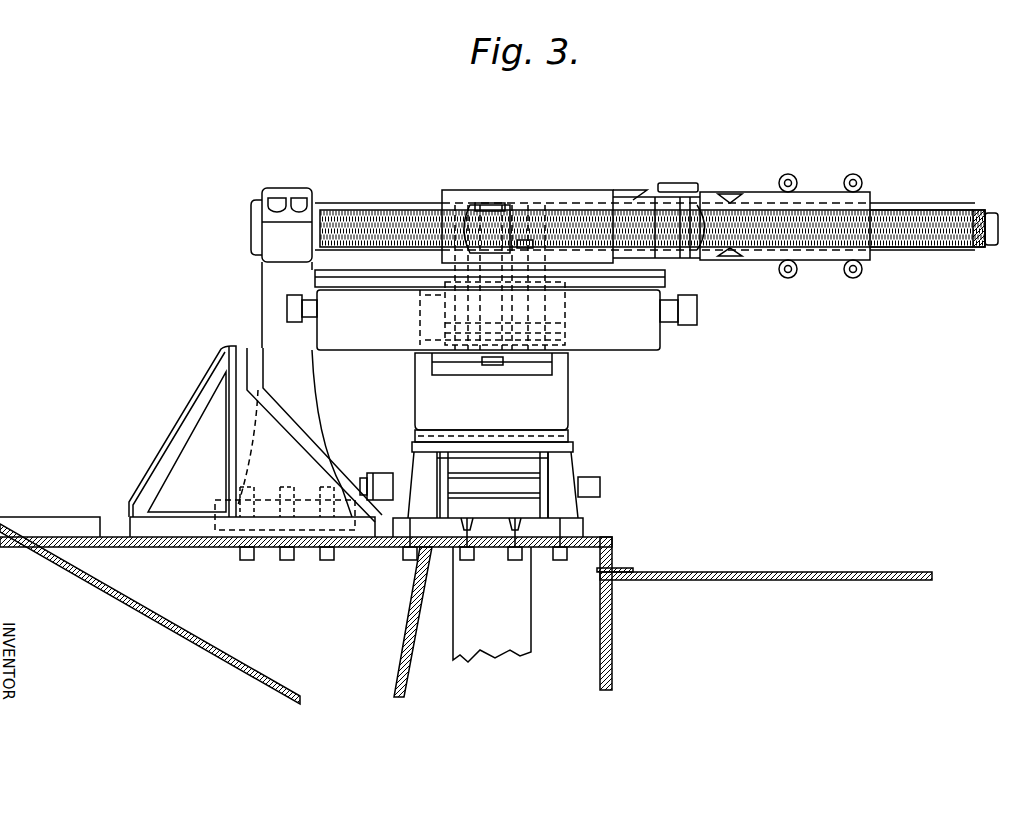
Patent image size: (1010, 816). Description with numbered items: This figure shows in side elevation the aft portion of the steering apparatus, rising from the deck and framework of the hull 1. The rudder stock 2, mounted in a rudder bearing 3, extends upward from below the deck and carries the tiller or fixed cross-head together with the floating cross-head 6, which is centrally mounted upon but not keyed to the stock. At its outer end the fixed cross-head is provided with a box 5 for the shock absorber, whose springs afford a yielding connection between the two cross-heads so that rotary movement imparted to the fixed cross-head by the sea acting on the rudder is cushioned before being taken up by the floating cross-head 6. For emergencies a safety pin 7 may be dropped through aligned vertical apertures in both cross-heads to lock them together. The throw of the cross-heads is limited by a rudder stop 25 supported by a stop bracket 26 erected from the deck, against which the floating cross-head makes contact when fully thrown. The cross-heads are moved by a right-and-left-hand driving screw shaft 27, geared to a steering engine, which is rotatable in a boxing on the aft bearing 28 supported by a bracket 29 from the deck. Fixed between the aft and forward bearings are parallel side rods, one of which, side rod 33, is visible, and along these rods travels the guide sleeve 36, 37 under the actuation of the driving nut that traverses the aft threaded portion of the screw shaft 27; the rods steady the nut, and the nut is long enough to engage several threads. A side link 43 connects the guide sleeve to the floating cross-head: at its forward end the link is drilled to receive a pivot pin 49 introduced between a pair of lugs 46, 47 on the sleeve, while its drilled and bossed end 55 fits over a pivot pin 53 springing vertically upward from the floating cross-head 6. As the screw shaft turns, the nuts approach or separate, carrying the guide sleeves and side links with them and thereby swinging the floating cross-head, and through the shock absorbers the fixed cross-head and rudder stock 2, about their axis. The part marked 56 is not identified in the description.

The hull component 1 is at (680, 600).
The rudder stock 2 is at (462, 645).
The rudder bearing 3 is at (571, 447).
The shock absorber box 5 is at (492, 277).
The floating cross-head 6 is at (512, 252).
The safety pin 7 is at (482, 360).
The rudder stop 25 is at (248, 352).
The stop bracket 26 is at (182, 431).
The driving screw shaft 27 is at (362, 214).
The aft bearing 28 is at (281, 225).
The bracket 29 is at (302, 402).
The side rod 33 is at (921, 228).
The guide sleeve 36 is at (785, 226).
The guide sleeve 37 is at (532, 200).
The side link 43 is at (545, 226).
The lug 46 is at (722, 198).
The lug 47 is at (722, 257).
The pivot pin 49 is at (680, 188).
The pivot pin 53 is at (490, 204).
The bossed end of side link 55 is at (462, 212).
The collar 56 is at (717, 227).